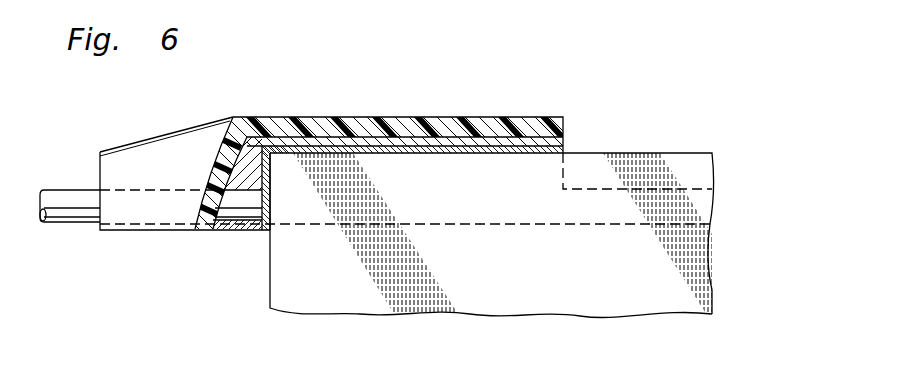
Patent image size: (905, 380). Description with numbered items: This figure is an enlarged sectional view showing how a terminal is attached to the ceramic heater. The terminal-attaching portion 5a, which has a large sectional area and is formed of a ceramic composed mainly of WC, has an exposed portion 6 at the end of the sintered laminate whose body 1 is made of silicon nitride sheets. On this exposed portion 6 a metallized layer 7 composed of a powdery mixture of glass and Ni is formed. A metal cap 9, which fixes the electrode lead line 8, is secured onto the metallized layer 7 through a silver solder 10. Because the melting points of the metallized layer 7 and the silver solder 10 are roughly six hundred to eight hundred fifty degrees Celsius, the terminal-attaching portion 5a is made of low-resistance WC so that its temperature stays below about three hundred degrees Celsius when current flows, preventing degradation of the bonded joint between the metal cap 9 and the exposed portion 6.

The connector body 1 is at (657, 157).
The terminal-attaching portion 5a is at (422, 215).
The exposed portion 6 is at (328, 152).
The metallized layer 7 is at (513, 150).
The electrode lead line 8 is at (68, 198).
The metal cap 9 is at (160, 140).
The silver solder 10 is at (401, 135).